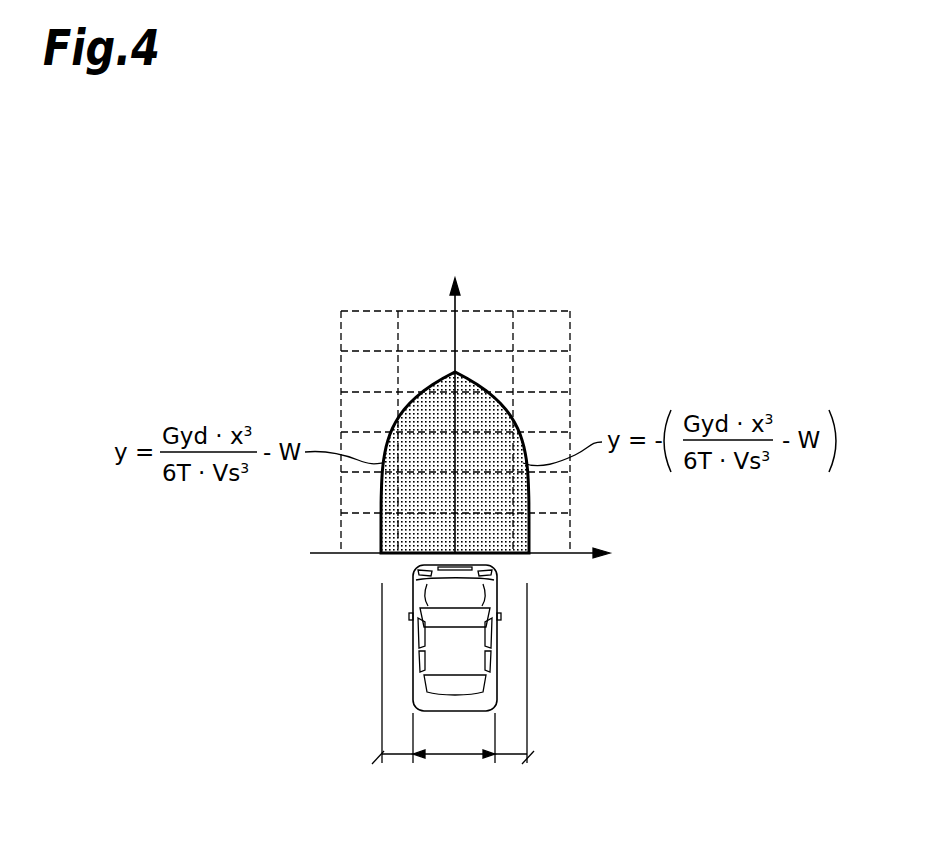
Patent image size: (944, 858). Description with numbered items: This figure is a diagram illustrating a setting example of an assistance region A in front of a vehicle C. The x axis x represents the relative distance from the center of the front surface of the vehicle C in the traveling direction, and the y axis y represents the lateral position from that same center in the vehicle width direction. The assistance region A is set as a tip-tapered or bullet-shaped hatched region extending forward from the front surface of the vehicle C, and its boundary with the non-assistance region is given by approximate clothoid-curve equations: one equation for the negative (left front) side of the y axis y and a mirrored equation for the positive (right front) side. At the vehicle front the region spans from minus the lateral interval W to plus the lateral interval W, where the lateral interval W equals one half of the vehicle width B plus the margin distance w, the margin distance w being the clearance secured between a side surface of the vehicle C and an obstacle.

The assistance region A is at (498, 403).
The vehicle C is at (497, 645).
The lateral interval W is at (452, 660).
The vehicle width B is at (454, 738).
The margin distance w is at (453, 743).
The x axis x is at (464, 411).
The y axis y is at (471, 553).